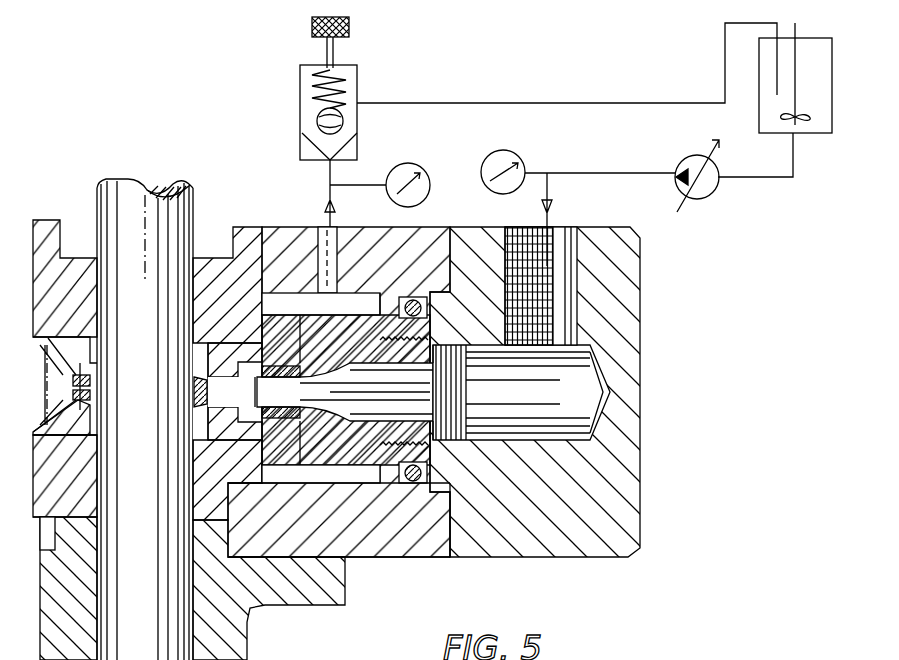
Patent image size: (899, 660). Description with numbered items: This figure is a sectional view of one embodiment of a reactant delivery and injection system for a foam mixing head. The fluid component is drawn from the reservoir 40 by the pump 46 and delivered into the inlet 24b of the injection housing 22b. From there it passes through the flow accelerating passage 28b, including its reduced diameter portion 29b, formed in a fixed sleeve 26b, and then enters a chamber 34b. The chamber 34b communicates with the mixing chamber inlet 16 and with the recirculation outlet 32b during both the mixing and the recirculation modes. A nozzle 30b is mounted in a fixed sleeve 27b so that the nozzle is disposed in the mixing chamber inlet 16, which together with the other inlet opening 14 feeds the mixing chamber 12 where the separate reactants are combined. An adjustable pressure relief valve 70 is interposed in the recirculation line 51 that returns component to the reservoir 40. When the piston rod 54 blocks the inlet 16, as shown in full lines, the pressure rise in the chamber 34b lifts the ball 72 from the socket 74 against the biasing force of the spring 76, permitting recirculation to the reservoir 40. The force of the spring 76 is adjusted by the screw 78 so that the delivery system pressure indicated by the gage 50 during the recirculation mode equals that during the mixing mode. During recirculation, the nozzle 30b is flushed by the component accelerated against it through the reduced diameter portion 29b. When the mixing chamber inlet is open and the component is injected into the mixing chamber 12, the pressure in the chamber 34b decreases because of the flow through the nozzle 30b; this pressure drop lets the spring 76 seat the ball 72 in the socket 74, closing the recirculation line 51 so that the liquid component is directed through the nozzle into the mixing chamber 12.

The mixing chamber 12 is at (127, 403).
The inlet opening 14 is at (104, 364).
The inlet opening 16 is at (188, 368).
The injection housing 22b is at (490, 560).
The inlet 24b is at (570, 232).
The fixed sleeve 26b is at (365, 470).
The fixed sleeve 27b is at (240, 326).
The flow accelerating passage 28b is at (352, 372).
The reduced diameter portion 29b is at (280, 440).
The nozzle 30b is at (227, 480).
The recirculation outlet 32b is at (320, 232).
The chamber 34b is at (235, 391).
The reservoir 40 is at (818, 112).
The pump 46 is at (700, 194).
The gage 50 is at (512, 168).
The recirculation line 51 is at (567, 63).
The piston rod 54 is at (104, 290).
The adjustable pressure relief valve 70 is at (296, 105).
The ball 72 is at (338, 110).
The socket 74 is at (348, 156).
The spring 76 is at (312, 80).
The screw 78 is at (349, 28).